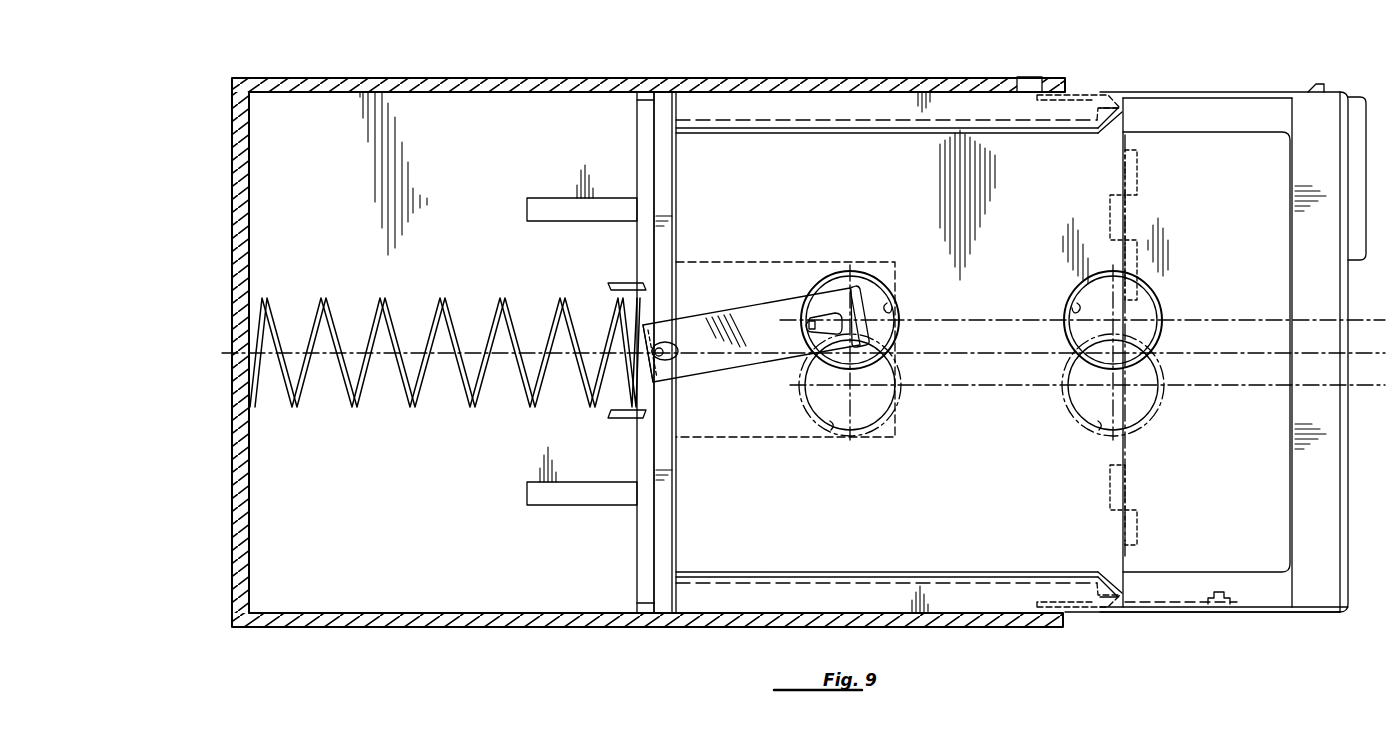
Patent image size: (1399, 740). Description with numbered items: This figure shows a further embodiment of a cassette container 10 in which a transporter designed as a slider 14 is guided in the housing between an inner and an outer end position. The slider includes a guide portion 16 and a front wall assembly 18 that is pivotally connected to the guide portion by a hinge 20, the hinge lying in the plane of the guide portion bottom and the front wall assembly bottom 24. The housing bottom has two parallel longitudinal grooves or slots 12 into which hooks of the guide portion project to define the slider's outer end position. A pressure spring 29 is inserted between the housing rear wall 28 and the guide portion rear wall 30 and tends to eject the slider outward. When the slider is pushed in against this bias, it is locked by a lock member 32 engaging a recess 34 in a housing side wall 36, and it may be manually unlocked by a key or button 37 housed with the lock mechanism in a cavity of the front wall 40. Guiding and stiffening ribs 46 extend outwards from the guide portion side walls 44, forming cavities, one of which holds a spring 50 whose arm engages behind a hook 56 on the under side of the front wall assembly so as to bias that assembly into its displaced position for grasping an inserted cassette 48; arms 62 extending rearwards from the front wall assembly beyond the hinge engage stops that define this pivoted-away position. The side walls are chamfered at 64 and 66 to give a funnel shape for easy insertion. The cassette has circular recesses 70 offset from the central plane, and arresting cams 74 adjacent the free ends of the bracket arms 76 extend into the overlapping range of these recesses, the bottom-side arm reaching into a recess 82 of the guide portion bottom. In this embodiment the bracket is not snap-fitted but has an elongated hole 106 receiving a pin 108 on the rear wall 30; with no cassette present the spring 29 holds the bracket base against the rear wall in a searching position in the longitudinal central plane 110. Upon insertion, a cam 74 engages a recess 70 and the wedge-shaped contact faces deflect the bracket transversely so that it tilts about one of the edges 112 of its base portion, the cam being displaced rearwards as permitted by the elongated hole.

The latch assembly housing 10 is at (372, 80).
The longitudinal grooves or slots 12 is at (543, 205).
The slider 14 is at (1245, 78).
The guide portion 16 is at (637, 567).
The front wall assembly 18 is at (1253, 612).
The hinge 20 is at (1127, 492).
The front wall assembly bottom 24 is at (1190, 112).
The housing rear wall 28 is at (248, 495).
The pressure spring 29 is at (357, 392).
The guide portion rear wall 30 is at (665, 500).
The lock member 32 is at (1315, 84).
The recess 34 is at (1030, 77).
The housing side wall 36 is at (822, 83).
The key or button 37 is at (1358, 166).
The front wall 40 is at (1341, 296).
The guide portion side walls 44 is at (815, 128).
The guiding and stiffening ribs 46 is at (755, 116).
The cassette 48 is at (1152, 142).
The spring 50 is at (1170, 604).
The hook 56 is at (1222, 596).
The arms 62 is at (1041, 103).
The chamfer 64 is at (884, 106).
The chamfer 66 is at (1115, 118).
The circular depressions or recesses 70 is at (892, 310).
The arresting cams 74 is at (811, 318).
The free ends of bracket arms 76 is at (731, 325).
The recess 82 is at (752, 428).
The elongated hole 106 is at (676, 338).
The pin 108 is at (669, 361).
The longitudinal central plane 110 is at (977, 355).
The edges of the bracket base portion 112 is at (632, 287).